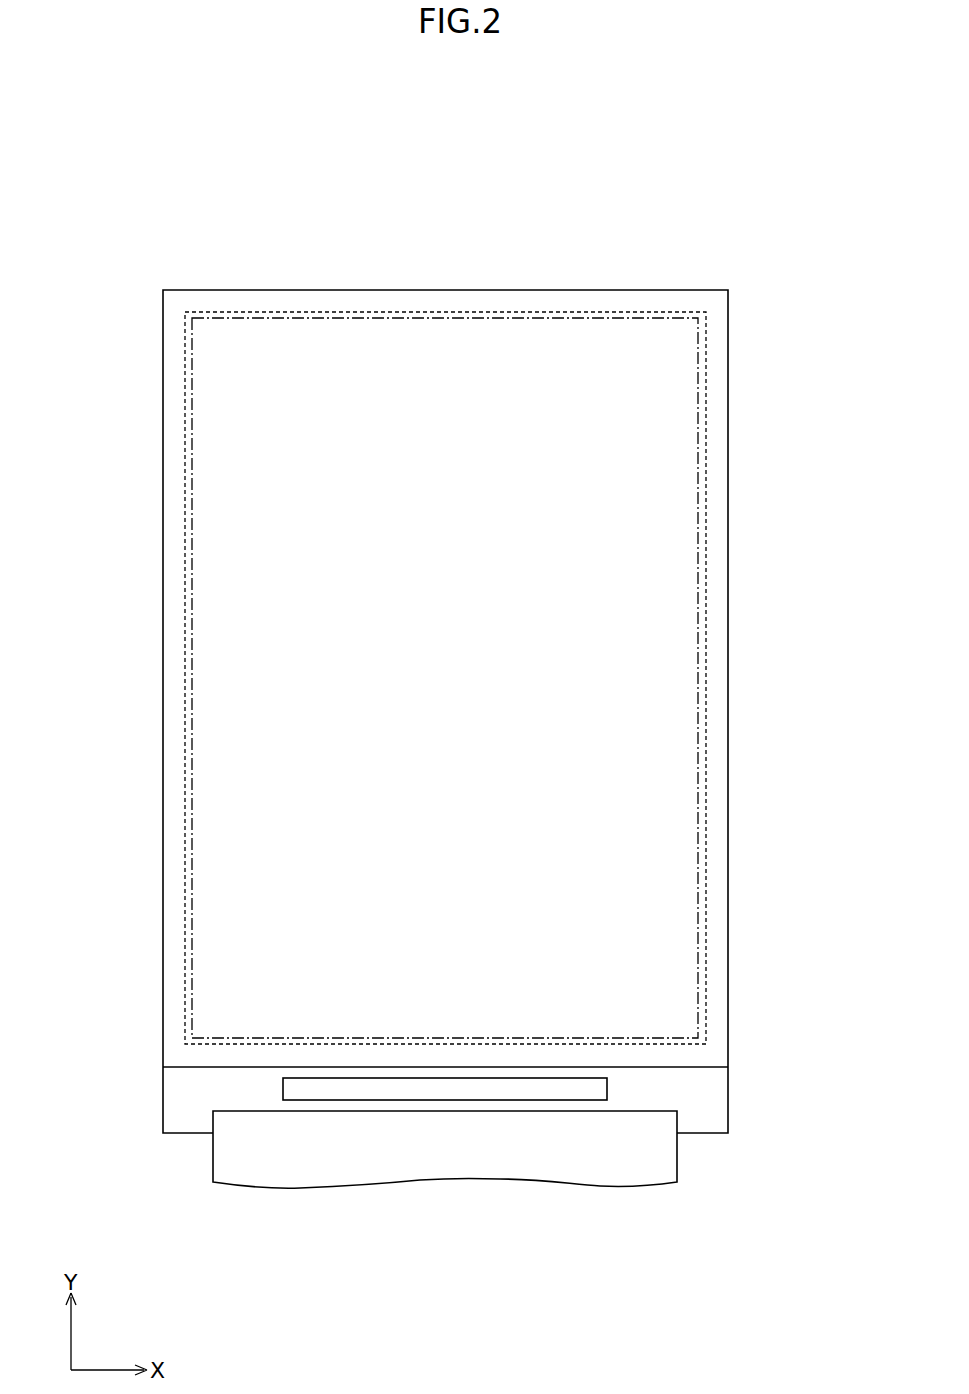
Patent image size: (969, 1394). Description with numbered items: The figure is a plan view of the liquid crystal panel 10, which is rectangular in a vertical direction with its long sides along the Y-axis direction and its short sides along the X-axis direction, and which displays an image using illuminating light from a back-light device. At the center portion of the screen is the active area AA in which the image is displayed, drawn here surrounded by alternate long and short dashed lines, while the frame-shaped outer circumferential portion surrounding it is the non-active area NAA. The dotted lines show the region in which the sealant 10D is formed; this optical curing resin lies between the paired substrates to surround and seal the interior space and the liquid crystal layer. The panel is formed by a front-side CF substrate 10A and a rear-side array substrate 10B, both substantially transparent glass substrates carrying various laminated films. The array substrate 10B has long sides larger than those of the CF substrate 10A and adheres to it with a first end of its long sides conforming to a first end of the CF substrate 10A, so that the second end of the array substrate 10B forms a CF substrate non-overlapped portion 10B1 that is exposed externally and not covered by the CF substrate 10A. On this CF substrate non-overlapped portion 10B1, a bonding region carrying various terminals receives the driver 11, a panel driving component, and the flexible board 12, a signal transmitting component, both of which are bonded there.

The liquid crystal panel 10 is at (728, 607).
The active area AA is at (581, 318).
The sealant 10D is at (250, 1044).
The non-active area NAA is at (191, 1089).
The CF substrate 10A is at (706, 1068).
The CF substrate non-overlapped portion 10B1 is at (712, 1110).
The array substrate 10B is at (705, 1133).
The driver 11 is at (443, 1086).
The flexible board 12 is at (343, 1165).